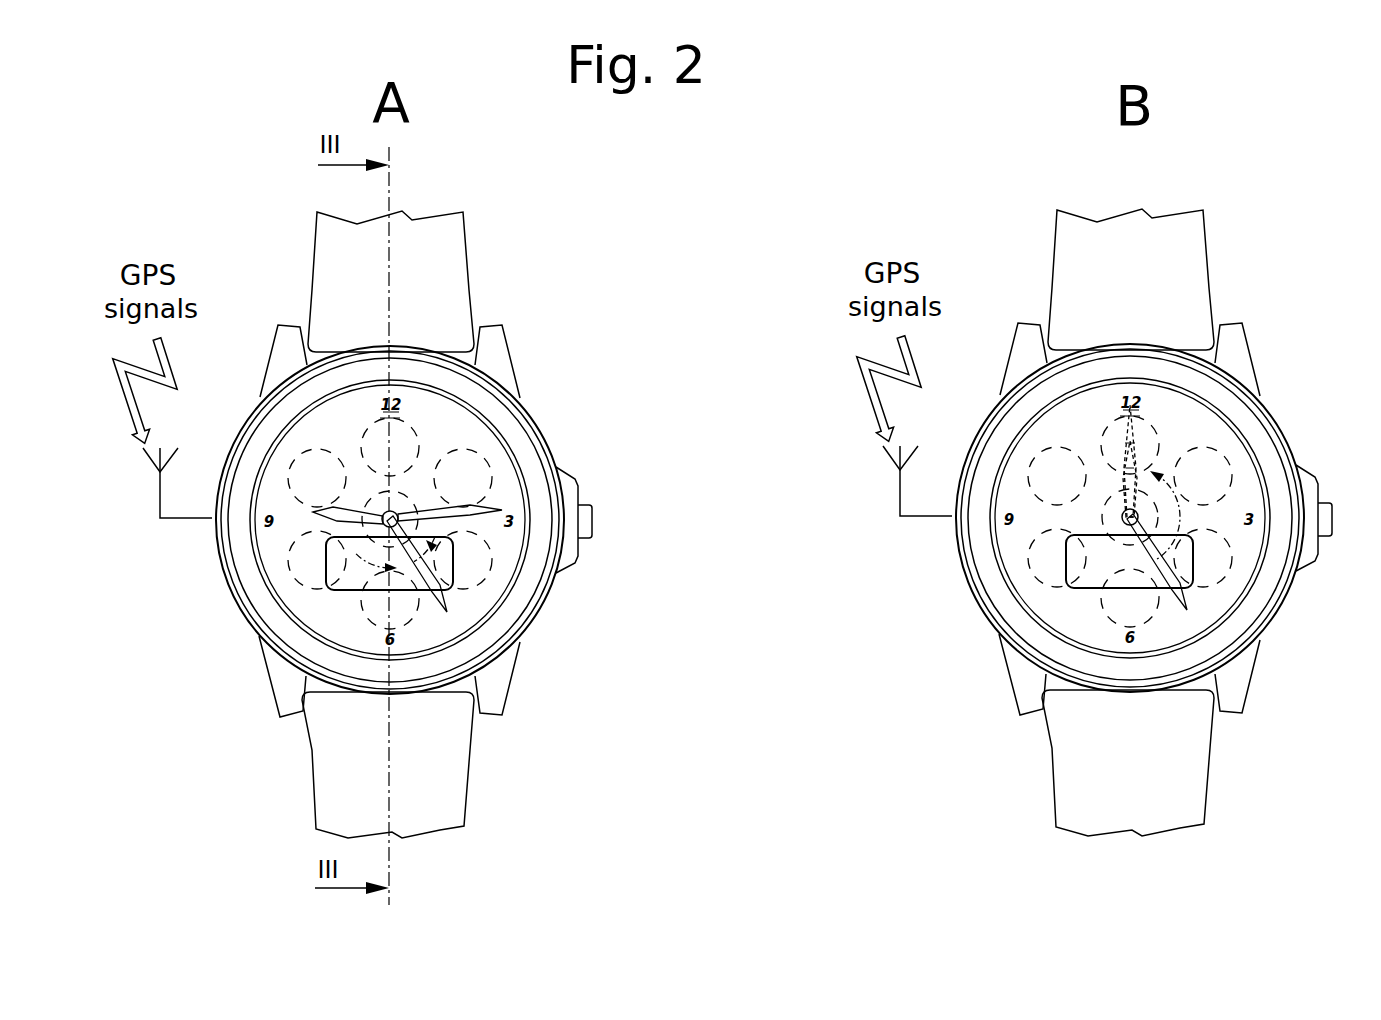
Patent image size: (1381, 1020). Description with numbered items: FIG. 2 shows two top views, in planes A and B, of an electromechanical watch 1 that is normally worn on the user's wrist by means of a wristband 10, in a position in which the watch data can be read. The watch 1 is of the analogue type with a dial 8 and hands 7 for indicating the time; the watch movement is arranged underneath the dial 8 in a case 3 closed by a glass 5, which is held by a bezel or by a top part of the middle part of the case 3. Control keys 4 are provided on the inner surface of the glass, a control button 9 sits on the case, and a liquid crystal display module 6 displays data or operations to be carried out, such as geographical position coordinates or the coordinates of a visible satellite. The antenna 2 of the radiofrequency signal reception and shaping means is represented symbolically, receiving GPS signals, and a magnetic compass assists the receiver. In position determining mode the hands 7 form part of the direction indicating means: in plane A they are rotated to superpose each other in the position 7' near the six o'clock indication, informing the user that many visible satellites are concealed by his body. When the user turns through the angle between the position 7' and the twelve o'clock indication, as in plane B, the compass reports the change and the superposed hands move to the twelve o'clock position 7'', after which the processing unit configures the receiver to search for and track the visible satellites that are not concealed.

The electromechanical watch 1 is at (264, 749).
The antenna 2 is at (162, 480).
The case 3 is at (527, 622).
The control keys 4 is at (300, 457).
The glass 5 is at (280, 597).
The liquid crystal display module 6 is at (452, 560).
The hands 7 is at (725, 517).
The superposed hands position 7' is at (806, 615).
The superposed hands at 12 o'clock position 7'' is at (1247, 435).
The dial 8 is at (327, 607).
The control button 9 is at (592, 520).
The wristband 10 is at (453, 286).